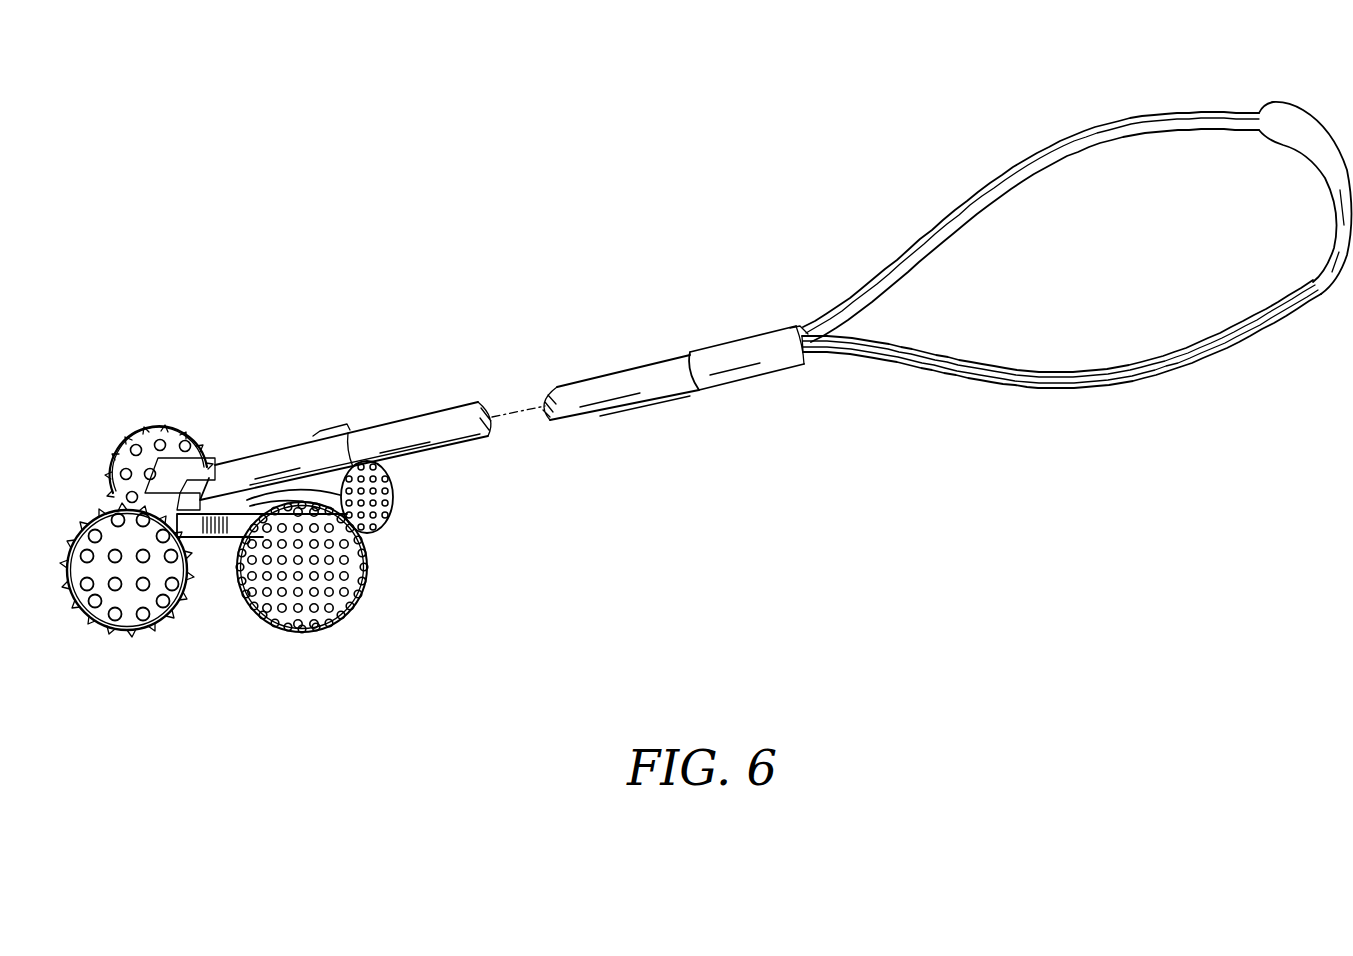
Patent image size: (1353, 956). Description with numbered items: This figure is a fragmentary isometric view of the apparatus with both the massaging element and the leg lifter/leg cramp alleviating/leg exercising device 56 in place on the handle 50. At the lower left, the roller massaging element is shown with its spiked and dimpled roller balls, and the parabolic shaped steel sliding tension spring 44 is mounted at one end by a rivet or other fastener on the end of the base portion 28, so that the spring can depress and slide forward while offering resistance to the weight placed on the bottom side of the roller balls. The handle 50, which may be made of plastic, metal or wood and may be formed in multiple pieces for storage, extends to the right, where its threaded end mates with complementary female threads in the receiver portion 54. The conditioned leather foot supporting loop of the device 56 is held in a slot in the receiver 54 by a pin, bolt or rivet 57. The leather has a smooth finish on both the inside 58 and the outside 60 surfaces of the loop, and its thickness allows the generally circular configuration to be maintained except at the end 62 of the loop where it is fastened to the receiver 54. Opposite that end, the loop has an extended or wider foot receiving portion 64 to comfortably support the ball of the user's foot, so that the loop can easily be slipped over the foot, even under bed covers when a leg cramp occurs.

The base portion 28 is at (212, 541).
The sliding tension spring 44 is at (387, 510).
The handle 50 is at (617, 407).
The receiver portion 54 is at (740, 340).
The leg lifter/leg cramp alleviating/leg exercising device 56 is at (1075, 133).
The pin, bolt or rivet 57 is at (787, 357).
The inside surface 58 is at (1147, 137).
The outside surface 60 is at (1123, 377).
The end of the loop 62 is at (820, 353).
The foot receiving portion 64 is at (1317, 113).